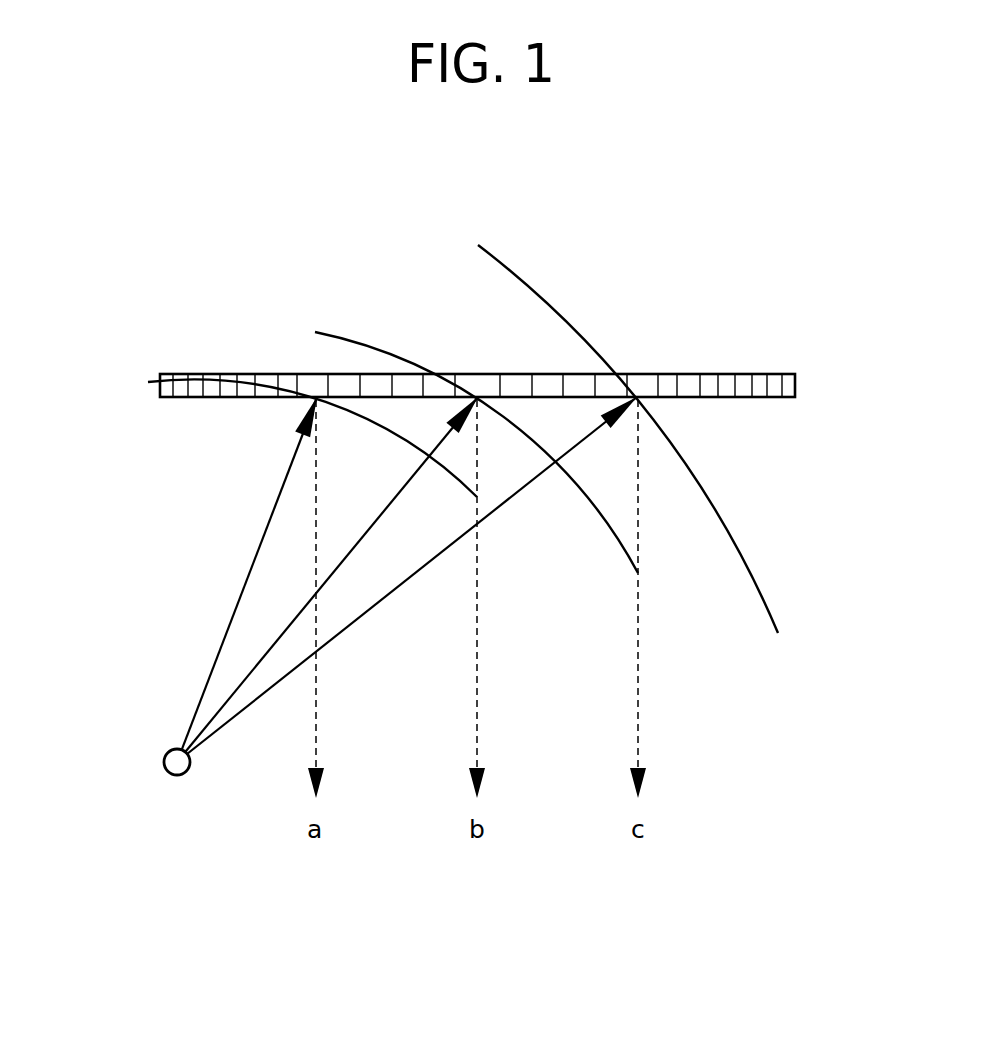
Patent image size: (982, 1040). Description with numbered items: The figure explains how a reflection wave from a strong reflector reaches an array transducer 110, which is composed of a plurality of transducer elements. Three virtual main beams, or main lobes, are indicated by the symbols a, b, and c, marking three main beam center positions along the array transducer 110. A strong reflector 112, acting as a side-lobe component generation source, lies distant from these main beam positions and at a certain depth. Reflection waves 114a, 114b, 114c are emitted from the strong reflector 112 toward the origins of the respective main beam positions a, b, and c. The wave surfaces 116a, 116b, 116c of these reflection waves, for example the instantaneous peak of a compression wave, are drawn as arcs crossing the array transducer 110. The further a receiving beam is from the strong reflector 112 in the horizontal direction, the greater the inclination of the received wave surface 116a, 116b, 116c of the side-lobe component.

The array transducer 110 is at (764, 373).
The strong reflector 112 is at (164, 752).
The reflection wave 114a is at (255, 555).
The reflection wave 114b is at (292, 616).
The reflection wave 114c is at (280, 680).
The wave surface 116a is at (246, 377).
The wave surface 116b is at (366, 340).
The wave surface 116c is at (537, 290).